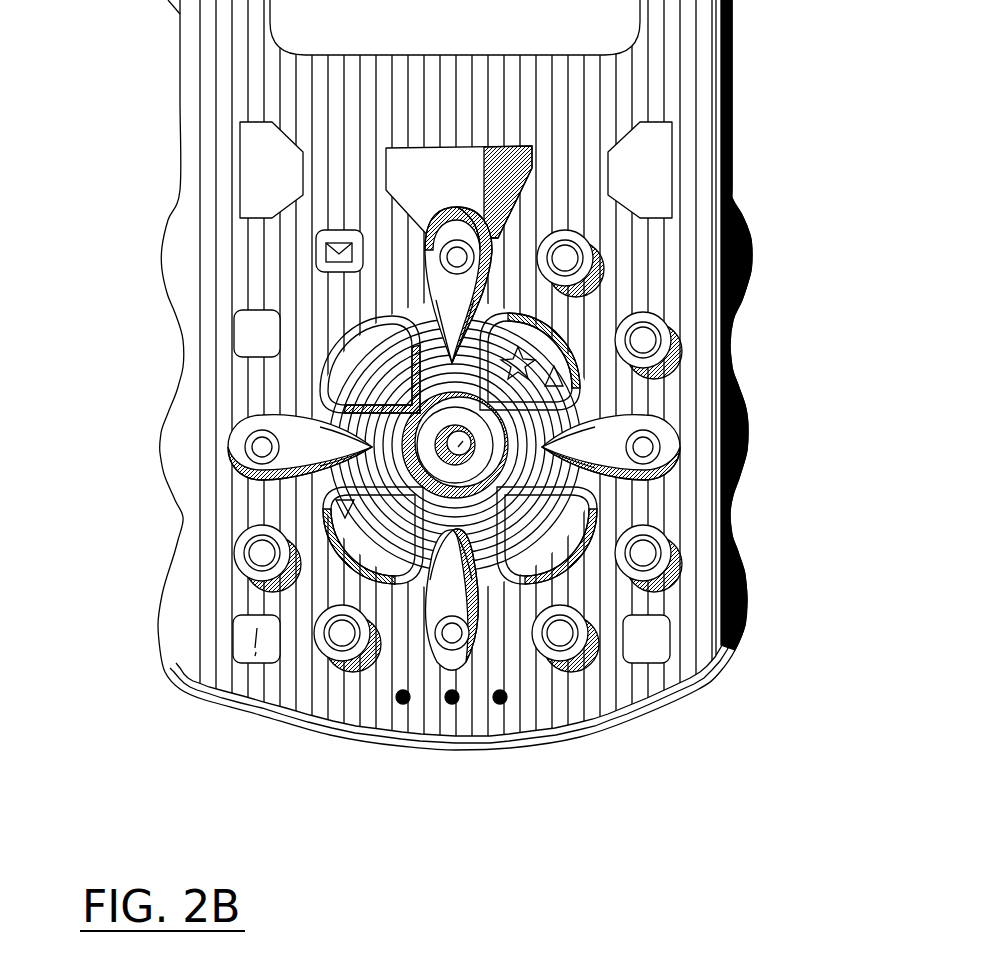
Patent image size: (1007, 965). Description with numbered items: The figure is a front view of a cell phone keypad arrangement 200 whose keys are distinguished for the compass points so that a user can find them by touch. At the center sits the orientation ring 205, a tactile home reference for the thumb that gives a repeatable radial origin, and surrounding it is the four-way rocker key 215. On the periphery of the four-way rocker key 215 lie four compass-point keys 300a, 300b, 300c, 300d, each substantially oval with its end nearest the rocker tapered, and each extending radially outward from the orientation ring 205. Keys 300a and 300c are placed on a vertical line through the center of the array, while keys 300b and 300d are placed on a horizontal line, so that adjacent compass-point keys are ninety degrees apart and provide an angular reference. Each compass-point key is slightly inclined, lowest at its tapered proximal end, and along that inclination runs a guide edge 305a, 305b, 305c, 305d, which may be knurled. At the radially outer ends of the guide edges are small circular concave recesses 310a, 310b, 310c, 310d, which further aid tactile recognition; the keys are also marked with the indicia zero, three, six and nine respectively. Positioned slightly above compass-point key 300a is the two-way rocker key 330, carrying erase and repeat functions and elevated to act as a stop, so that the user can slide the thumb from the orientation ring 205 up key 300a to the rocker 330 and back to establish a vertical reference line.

The keypad arrangement 200 is at (736, 74).
The orientation ring 205 is at (465, 447).
The four-way rocker key 215 is at (490, 375).
The two-way rocker key 330 is at (398, 158).
The compass-point key 300a is at (433, 278).
The compass-point key 300b is at (608, 432).
The compass-point key 300c is at (478, 600).
The compass-point key 300d is at (290, 478).
The guide edge 305a is at (455, 318).
The guide edge 305b is at (565, 470).
The guide edge 305c is at (445, 580).
The guide edge 305d is at (372, 440).
The circular concave recess 310a is at (440, 250).
The circular concave recess 310b is at (662, 448).
The circular concave recess 310c is at (438, 650).
The circular concave recess 310d is at (246, 452).